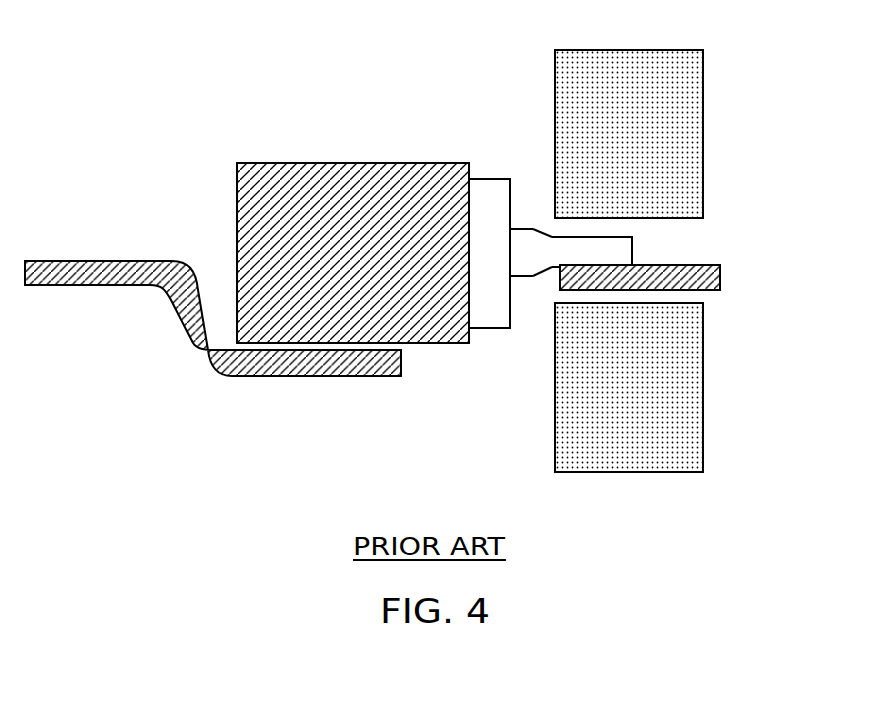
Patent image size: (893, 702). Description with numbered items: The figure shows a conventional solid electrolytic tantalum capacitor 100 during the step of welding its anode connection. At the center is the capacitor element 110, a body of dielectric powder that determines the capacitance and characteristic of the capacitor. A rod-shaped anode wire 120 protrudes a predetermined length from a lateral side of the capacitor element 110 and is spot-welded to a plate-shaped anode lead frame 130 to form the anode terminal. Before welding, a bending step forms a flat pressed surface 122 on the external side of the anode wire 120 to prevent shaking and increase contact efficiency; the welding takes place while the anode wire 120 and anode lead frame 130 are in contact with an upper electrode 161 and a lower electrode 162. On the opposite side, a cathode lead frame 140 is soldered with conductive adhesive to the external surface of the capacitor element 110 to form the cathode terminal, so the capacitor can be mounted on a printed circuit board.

The tantalum capacitor 100 is at (143, 165).
The capacitor element 110 is at (437, 320).
The anode wire 120 is at (634, 193).
The flat pressed surface 122 is at (552, 235).
The anode lead frame 130 is at (720, 273).
The cathode lead frame 140 is at (153, 277).
The upper electrode 161 is at (678, 112).
The lower electrode 162 is at (675, 382).